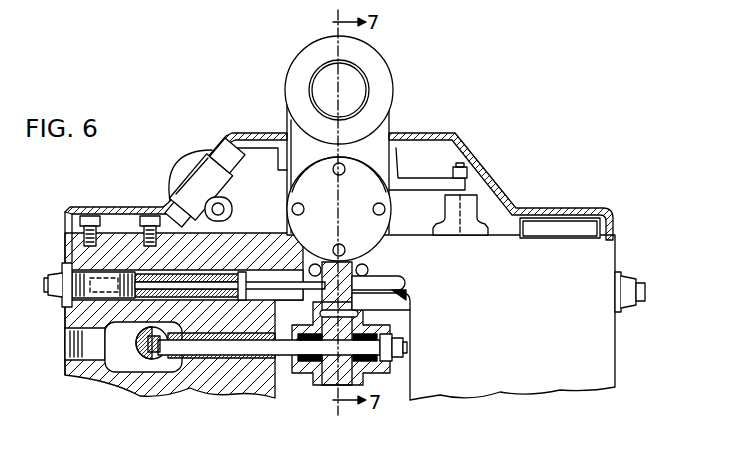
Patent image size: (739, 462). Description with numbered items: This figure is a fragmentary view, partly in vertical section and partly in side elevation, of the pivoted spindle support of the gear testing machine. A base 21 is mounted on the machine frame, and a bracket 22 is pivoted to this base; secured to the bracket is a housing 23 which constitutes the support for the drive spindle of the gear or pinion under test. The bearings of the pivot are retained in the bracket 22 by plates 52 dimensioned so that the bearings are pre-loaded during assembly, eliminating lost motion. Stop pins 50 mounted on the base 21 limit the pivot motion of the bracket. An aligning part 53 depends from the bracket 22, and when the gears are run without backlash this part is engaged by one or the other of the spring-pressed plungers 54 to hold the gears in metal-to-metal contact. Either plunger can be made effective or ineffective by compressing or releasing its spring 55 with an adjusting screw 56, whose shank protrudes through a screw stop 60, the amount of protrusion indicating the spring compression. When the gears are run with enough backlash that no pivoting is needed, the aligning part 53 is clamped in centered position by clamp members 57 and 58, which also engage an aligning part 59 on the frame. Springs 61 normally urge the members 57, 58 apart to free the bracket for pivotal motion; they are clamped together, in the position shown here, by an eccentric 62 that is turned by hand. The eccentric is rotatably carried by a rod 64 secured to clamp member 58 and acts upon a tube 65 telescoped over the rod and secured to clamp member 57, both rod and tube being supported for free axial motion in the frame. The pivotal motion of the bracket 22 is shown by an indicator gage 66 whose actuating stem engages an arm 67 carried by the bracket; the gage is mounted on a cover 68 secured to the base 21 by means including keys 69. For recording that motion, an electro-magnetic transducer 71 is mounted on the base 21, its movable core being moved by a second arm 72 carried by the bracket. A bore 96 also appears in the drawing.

The base 21 is at (70, 374).
The bracket 22 is at (382, 140).
The housing 23 is at (386, 64).
The stop pins 50 is at (312, 266).
The plates 52 is at (312, 178).
The aligning part 53 is at (405, 305).
The spring-pressed plungers 54 is at (392, 282).
The spring 55 is at (82, 316).
The adjusting screw 56 is at (80, 306).
The clamp member 57 is at (312, 380).
The clamp member 58 is at (382, 380).
The aligning part 59 is at (330, 388).
The screw stop 60 is at (63, 272).
The springs 61 is at (403, 336).
The eccentric 62 is at (158, 360).
The rod 64 is at (232, 356).
The tube 65 is at (263, 372).
The indicator gage 66 is at (185, 168).
The arm 67 is at (250, 140).
The cover 68 is at (114, 207).
The keys 69 is at (80, 233).
The electro-magnetic transducer 71 is at (478, 210).
The second arm 72 is at (447, 183).
The bore 96 is at (325, 78).